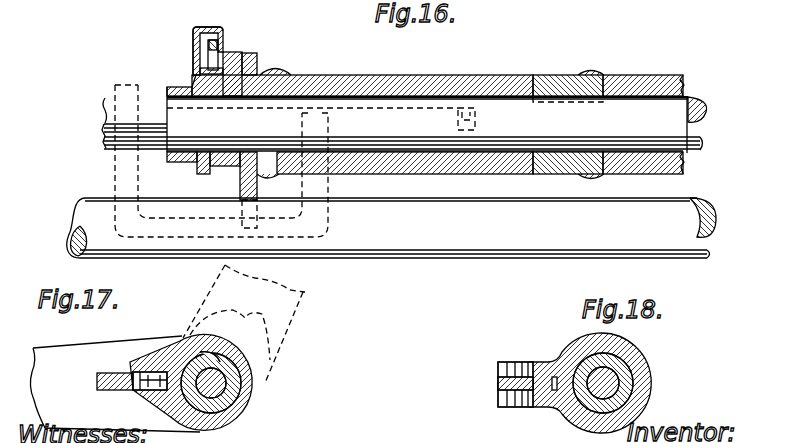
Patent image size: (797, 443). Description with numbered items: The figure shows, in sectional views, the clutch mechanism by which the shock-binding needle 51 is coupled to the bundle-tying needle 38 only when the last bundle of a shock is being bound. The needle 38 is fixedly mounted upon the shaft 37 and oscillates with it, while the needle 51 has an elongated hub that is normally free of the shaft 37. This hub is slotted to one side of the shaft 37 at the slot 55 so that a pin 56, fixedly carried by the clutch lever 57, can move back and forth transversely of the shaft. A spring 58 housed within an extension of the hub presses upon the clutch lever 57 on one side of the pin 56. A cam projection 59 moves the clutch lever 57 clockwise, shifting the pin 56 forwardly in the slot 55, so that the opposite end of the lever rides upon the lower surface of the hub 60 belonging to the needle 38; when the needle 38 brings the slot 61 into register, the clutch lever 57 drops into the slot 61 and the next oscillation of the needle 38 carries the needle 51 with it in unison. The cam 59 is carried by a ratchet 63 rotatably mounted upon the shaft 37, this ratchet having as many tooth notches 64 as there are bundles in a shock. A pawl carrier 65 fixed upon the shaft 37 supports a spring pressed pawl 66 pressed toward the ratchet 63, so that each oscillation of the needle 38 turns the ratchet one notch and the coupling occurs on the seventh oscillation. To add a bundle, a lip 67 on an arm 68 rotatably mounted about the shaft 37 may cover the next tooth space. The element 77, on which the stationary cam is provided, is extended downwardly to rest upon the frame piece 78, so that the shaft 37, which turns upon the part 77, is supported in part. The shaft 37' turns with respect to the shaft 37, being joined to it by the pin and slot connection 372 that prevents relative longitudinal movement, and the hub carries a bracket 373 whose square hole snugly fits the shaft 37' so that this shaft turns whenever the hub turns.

In FIG. 16, the shaft 37 is at (455, 124).
In FIG. 17, the shaft 37 is at (248, 405).
In FIG. 18, the shaft 37 is at (641, 383).
In FIG. 17, the shaft 37' is at (235, 388).
In FIG. 18, the shaft 37' is at (619, 369).
In FIG. 16, the pin and slot connection 372 is at (472, 107).
In FIG. 16, the bracket 373 is at (115, 163).
In FIG. 16, the needle 38 is at (591, 72).
In FIG. 17, the needle 38 is at (110, 350).
In FIG. 16, the needle 51 is at (272, 70).
In FIG. 16, the slot 55 is at (660, 78).
In FIG. 18, the slot 55 is at (512, 368).
In FIG. 18, the pin 56 is at (525, 368).
In FIG. 17, the clutch lever 57 is at (97, 383).
In FIG. 18, the clutch lever 57 is at (498, 384).
In FIG. 16, the spring 58 is at (440, 80).
In FIG. 18, the spring 58 is at (633, 362).
In FIG. 16, the cam projection 59 is at (233, 58).
In FIG. 16, the hub 60 is at (542, 80).
In FIG. 17, the hub 60 is at (268, 343).
In FIG. 17, the slot 61 is at (238, 327).
In FIG. 16, the ratchet 63 is at (235, 160).
In FIG. 16, the tooth notches 64 is at (222, 167).
In FIG. 16, the pawl carrier 65 is at (205, 27).
In FIG. 16, the spring pressed pawl 66 is at (223, 42).
In FIG. 16, the lip 67 is at (212, 68).
In FIG. 16, the arm 68 is at (253, 60).
In FIG. 16, the element 77 is at (262, 185).
In FIG. 16, the frame piece 78 is at (408, 232).